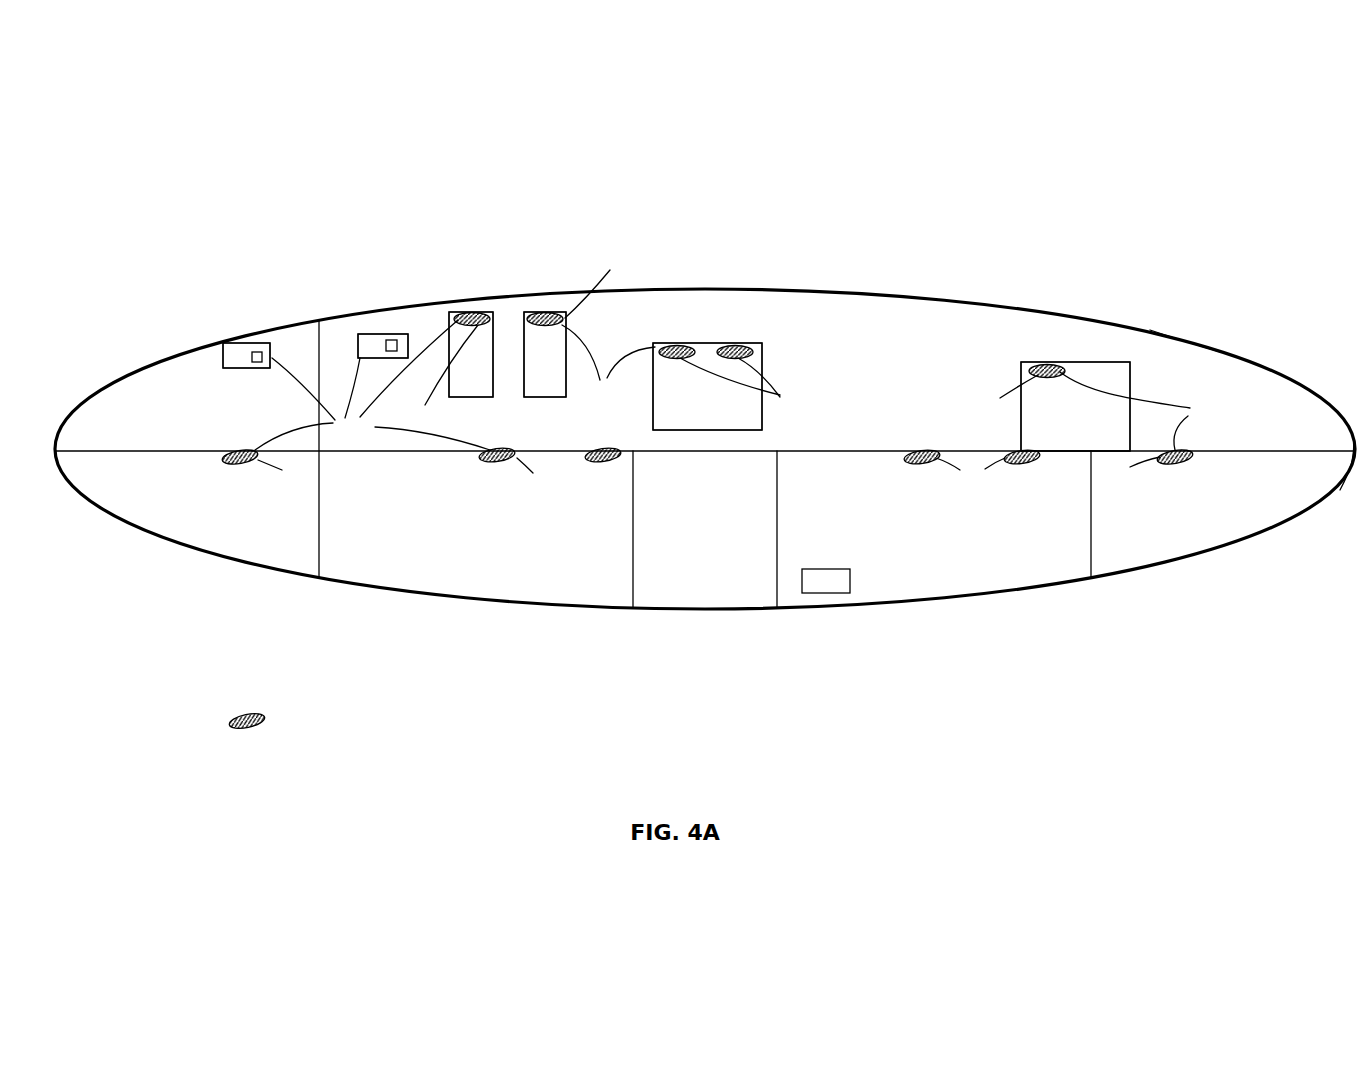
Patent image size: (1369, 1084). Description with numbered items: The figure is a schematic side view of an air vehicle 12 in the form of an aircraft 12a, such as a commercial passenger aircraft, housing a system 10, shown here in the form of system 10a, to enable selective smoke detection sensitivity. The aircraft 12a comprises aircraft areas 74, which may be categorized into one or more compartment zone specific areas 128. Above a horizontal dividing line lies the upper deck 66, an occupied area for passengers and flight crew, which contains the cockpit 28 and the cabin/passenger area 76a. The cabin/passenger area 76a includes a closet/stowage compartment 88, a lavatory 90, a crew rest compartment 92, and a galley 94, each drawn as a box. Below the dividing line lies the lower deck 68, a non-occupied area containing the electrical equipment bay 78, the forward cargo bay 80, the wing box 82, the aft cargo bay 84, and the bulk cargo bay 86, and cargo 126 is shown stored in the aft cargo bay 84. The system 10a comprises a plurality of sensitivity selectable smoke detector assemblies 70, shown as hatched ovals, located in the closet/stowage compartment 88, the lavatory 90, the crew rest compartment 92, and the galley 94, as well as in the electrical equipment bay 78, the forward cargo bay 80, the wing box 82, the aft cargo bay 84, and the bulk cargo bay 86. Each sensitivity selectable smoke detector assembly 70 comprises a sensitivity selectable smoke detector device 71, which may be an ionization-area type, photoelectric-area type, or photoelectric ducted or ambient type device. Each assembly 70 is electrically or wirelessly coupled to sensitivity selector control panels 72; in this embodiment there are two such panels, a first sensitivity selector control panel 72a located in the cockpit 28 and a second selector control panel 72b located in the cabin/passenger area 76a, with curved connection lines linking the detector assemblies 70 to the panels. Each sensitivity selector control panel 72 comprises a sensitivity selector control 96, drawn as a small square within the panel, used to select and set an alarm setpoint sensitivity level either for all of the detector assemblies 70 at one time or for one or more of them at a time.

The system 10 is at (430, 250).
The system 10a is at (745, 385).
The air vehicle 12 is at (841, 238).
The aircraft 12a is at (1202, 344).
The cockpit 28 is at (225, 449).
The upper deck 66 is at (1328, 428).
The lower deck 68 is at (1325, 483).
The sensitivity selectable smoke detector assembly 70 is at (481, 316).
The sensitivity selectable smoke detector device 71 is at (709, 365).
The sensitivity selector control panel 72 is at (240, 338).
The first sensitivity selector control panel 72a is at (226, 350).
The second selector control panel 72b is at (362, 345).
The aircraft areas 74 is at (112, 405).
The cabin/passenger area 76a is at (886, 373).
The electrical equipment bay 78 is at (206, 510).
The forward cargo bay 80 is at (462, 547).
The wing box 82 is at (705, 529).
The aft cargo bay 84 is at (945, 547).
The bulk cargo bay 86 is at (1135, 514).
The closet/stowage compartment 88 is at (473, 310).
The lavatory 90 is at (546, 308).
The crew rest compartment 92 is at (670, 343).
The galley 94 is at (1093, 360).
The sensitivity selector control 96 is at (259, 350).
The cargo 126 is at (831, 593).
The compartment zone specific areas 128 is at (1250, 377).